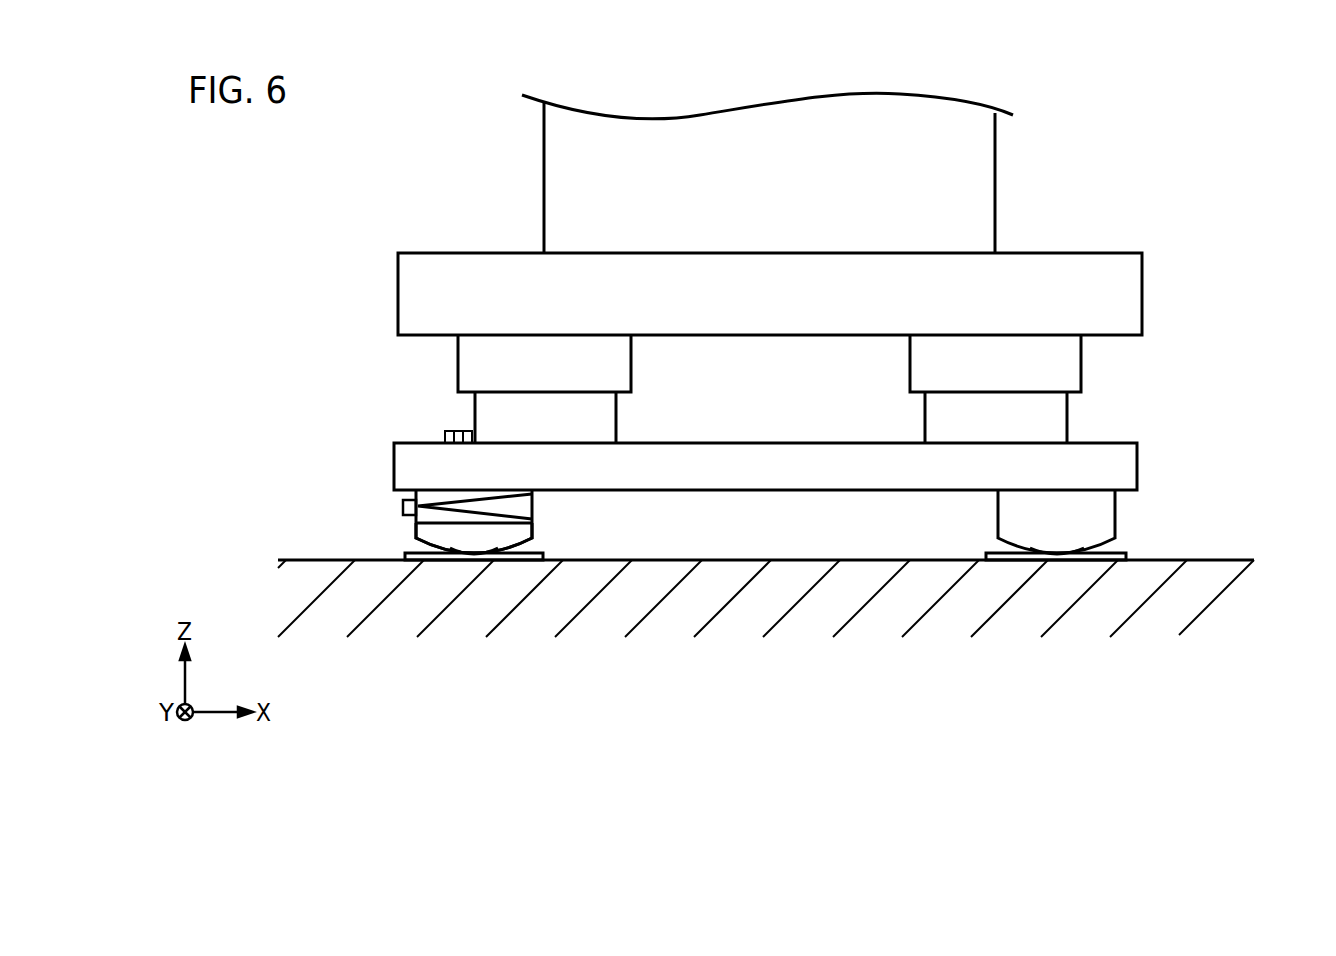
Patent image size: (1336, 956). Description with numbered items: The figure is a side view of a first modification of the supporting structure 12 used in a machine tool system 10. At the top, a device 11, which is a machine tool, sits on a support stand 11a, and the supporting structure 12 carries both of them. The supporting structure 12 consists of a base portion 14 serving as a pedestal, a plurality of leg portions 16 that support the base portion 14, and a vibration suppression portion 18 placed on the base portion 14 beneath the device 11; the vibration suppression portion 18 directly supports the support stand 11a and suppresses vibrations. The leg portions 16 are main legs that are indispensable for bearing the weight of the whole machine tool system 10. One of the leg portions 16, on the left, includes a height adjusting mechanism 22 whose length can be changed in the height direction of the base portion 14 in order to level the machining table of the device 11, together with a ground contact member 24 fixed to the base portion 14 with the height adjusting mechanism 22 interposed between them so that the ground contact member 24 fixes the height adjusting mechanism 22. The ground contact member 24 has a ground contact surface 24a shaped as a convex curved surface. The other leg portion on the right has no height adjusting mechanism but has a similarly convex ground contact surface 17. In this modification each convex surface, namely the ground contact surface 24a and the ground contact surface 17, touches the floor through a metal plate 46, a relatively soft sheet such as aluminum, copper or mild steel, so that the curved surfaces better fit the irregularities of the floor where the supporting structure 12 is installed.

The machine tool system 10 is at (1134, 220).
The device 11 is at (995, 188).
The support stand 11a is at (1142, 290).
The supporting structure 12 is at (276, 377).
The base portion 14 is at (412, 465).
The leg portions 16 is at (387, 492).
The ground contact surface 17 is at (1100, 548).
The vibration suppression portion 18 is at (496, 417).
The height adjusting mechanism 22 is at (540, 493).
The ground contact member 24 is at (525, 532).
The ground contact surface 24a is at (512, 548).
The metal plate 46 is at (447, 563).